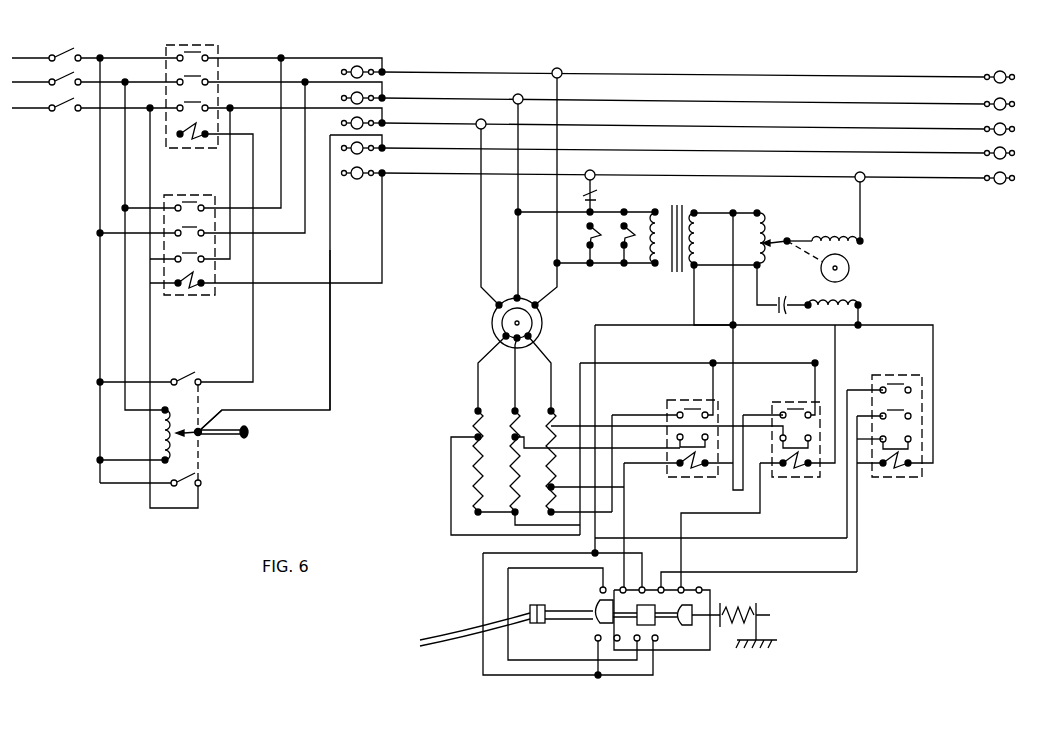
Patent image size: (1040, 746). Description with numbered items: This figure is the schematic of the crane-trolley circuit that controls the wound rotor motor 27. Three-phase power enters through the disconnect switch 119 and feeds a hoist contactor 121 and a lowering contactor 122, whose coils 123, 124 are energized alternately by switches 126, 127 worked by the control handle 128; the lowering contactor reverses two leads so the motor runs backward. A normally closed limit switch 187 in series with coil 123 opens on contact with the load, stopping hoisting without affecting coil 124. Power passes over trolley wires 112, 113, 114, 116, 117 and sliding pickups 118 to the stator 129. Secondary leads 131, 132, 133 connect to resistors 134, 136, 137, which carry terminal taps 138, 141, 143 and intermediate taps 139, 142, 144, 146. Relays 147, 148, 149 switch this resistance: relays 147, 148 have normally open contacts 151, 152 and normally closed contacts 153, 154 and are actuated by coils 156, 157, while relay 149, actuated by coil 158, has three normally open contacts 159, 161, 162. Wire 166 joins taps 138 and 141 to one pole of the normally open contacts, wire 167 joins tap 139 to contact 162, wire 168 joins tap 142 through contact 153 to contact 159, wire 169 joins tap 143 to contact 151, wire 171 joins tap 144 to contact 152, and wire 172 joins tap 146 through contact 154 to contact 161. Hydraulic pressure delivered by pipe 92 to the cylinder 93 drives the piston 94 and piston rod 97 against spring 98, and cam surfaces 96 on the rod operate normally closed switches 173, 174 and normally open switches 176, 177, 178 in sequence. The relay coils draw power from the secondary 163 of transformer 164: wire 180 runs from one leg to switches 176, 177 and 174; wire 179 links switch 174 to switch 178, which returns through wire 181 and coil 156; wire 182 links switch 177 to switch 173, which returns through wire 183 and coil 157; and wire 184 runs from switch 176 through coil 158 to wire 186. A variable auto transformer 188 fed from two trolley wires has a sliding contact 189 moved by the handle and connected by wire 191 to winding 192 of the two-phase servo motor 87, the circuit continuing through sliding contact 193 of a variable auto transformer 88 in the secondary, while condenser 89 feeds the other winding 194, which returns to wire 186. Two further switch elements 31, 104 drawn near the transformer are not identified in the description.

The wound rotor motor 27 is at (486, 322).
The switch 31 is at (588, 250).
The two phase servo motor 87 is at (858, 270).
The variable auto transformer 88 is at (757, 247).
The condenser 89 is at (780, 301).
The pipe 92 is at (470, 638).
The cylinder 93 is at (530, 608).
The piston 94 is at (560, 610).
The cam surfaces 96 is at (687, 627).
The piston rod 97 is at (596, 606).
The spring 98 is at (746, 608).
The switch 104 is at (626, 250).
The trolley wire 112 is at (633, 72).
The trolley wire 113 is at (690, 98).
The trolley wire 114 is at (745, 123).
The trolley wire 116 is at (790, 148).
The trolley wire 117 is at (842, 173).
The sliding pickups 118 is at (863, 182).
The disconnect switch 119 is at (66, 58).
The hoist contactor 121 is at (180, 195).
The lowering contactor 122 is at (192, 48).
The operating coil 123 is at (180, 290).
The coil 124 is at (203, 130).
The switch 126 is at (195, 490).
The switch 127 is at (188, 380).
The control handle 128 is at (214, 436).
The stator 129 is at (492, 313).
The secondary circuit lead 131 is at (478, 360).
The secondary circuit lead 132 is at (514, 362).
The secondary circuit lead 133 is at (550, 362).
The resistor 134 is at (510, 462).
The resistor 136 is at (508, 490).
The resistor 137 is at (546, 470).
The terminal tap 138 is at (546, 490).
The intermediate tap 139 is at (478, 425).
The terminal tap 141 is at (478, 516).
The intermediate tap 142 is at (513, 432).
The terminal tap 143 is at (514, 516).
The intermediate tap 144 is at (550, 516).
The intermediate tap 146 is at (550, 432).
The relay 147 is at (683, 398).
The relay 148 is at (782, 392).
The relay 149 is at (920, 406).
The normally open contacts 151 is at (684, 393).
The normally open contacts 152 is at (800, 403).
The normally closed contacts 153 is at (676, 462).
The normally closed contacts 154 is at (780, 467).
The operating coil 156 is at (697, 470).
The coil 157 is at (808, 468).
The operating coil 158 is at (888, 468).
The normally open contacts 159 is at (912, 461).
The normally open contacts 161 is at (912, 437).
The normally open contacts 162 is at (908, 388).
The secondary 163 is at (702, 212).
The transformer 164 is at (660, 211).
The wire 166 is at (628, 363).
The wire 167 is at (451, 448).
The wire 168 is at (623, 450).
The wire 169 is at (612, 505).
The wire 171 is at (712, 478).
The wire 172 is at (737, 426).
The normally closed switch 173 is at (690, 587).
The normally closed switch 174 is at (645, 628).
The normally open switch 176 is at (636, 600).
The normally open switch 177 is at (595, 641).
The normally open switch 178 is at (616, 645).
The wire 179 is at (532, 676).
The wire 180 is at (614, 325).
The wire 181 is at (625, 545).
The wire 182 is at (714, 644).
The wire 183 is at (682, 562).
The wire 184 is at (858, 550).
The wire 186 is at (882, 325).
The limit switch 187 is at (600, 199).
The variable auto transformer 188 is at (165, 435).
The sliding contact 189 is at (200, 438).
The wire 191 is at (331, 347).
The winding 192 is at (823, 240).
The sliding contact 193 is at (779, 238).
The winding 194 is at (846, 297).